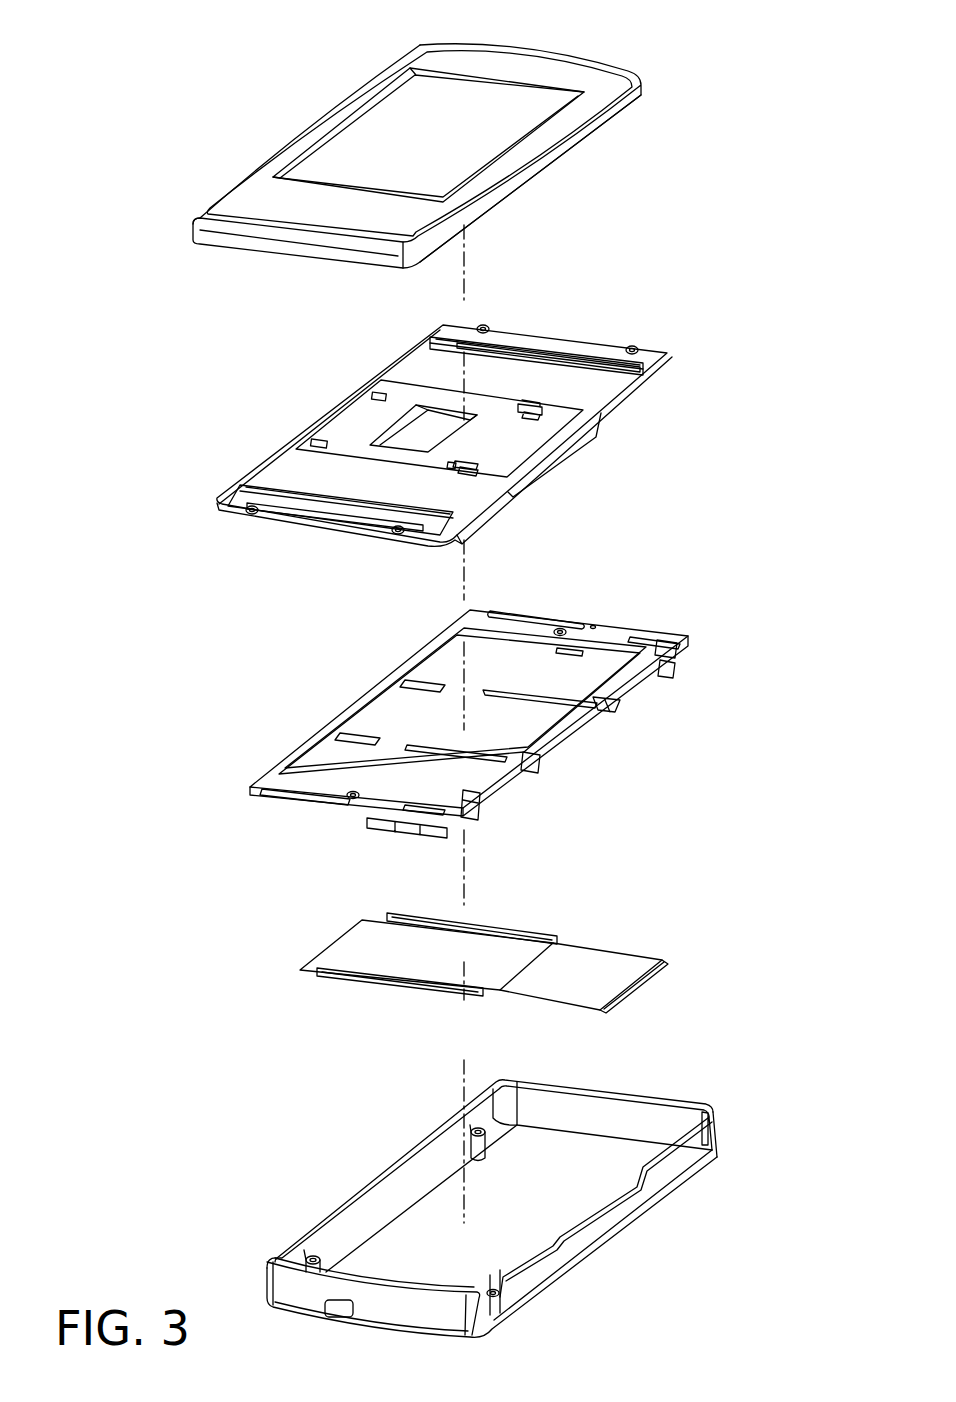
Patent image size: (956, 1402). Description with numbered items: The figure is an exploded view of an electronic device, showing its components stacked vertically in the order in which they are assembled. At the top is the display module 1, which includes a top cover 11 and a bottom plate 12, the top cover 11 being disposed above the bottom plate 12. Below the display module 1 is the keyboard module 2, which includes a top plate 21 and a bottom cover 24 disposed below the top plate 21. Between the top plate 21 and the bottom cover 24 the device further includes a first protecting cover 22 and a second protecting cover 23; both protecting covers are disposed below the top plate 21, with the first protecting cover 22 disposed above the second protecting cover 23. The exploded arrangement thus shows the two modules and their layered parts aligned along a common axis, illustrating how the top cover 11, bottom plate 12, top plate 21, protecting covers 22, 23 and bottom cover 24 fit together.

The display module 1 is at (803, 8).
The top cover 11 is at (583, 73).
The bottom plate 12 is at (583, 338).
The keyboard module 2 is at (805, 1342).
The top plate 21 is at (630, 632).
The first protecting cover 22 is at (537, 947).
The second protecting cover 23 is at (657, 977).
The bottom cover 24 is at (683, 1107).